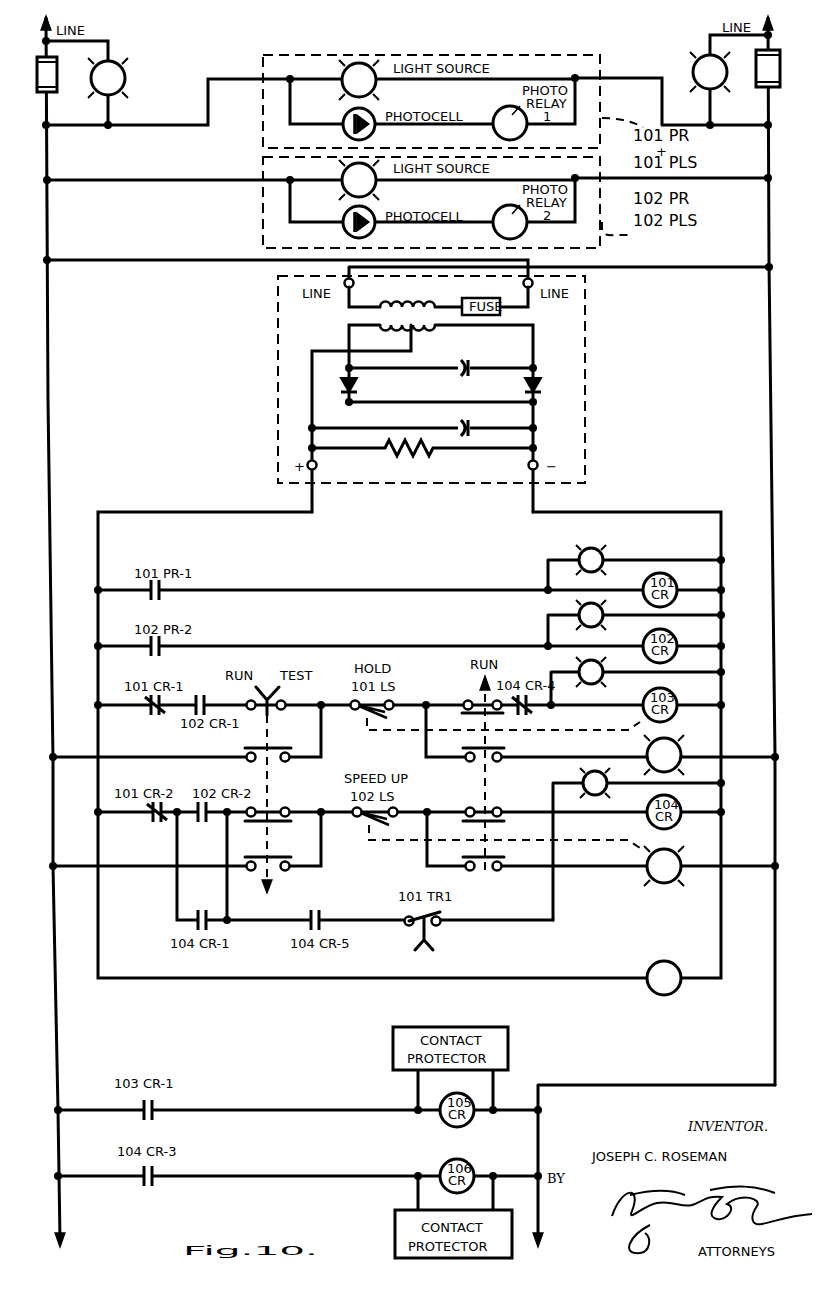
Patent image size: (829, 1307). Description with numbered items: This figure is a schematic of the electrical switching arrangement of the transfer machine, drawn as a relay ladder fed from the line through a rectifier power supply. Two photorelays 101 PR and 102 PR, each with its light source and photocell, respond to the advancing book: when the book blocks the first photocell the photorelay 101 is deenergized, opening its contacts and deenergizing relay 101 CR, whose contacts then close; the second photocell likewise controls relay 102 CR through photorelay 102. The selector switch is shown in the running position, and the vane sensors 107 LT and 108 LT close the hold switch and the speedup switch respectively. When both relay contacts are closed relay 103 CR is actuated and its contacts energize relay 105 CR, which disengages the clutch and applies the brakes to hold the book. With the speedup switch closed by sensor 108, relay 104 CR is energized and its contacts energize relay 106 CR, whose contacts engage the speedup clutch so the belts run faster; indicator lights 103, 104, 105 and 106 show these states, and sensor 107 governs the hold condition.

The photorelay 101 PR / relay 101 CR 101 is at (130, 78).
The photorelay 102 PR / relay 102 CR 102 is at (683, 65).
The relay 103 CR 103 is at (596, 549).
The relay 104 CR 104 is at (591, 609).
The relay 105 CR 105 is at (591, 666).
The relay 106 CR 106 is at (591, 778).
The disc or vane sensor 107 LT 107 is at (686, 745).
The disc or vane sensor 108 LT 108 is at (652, 877).